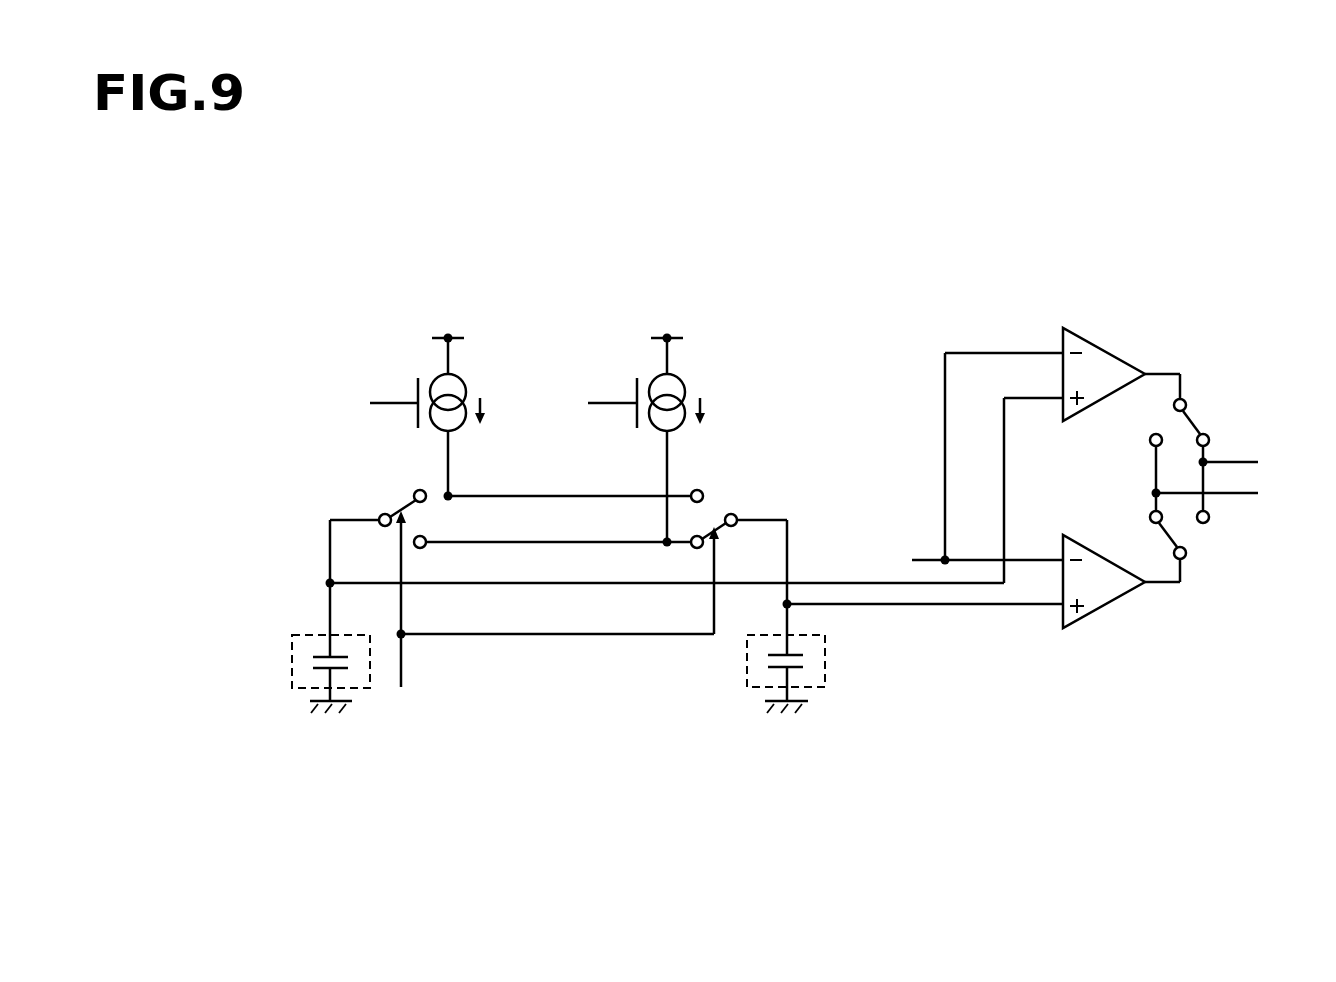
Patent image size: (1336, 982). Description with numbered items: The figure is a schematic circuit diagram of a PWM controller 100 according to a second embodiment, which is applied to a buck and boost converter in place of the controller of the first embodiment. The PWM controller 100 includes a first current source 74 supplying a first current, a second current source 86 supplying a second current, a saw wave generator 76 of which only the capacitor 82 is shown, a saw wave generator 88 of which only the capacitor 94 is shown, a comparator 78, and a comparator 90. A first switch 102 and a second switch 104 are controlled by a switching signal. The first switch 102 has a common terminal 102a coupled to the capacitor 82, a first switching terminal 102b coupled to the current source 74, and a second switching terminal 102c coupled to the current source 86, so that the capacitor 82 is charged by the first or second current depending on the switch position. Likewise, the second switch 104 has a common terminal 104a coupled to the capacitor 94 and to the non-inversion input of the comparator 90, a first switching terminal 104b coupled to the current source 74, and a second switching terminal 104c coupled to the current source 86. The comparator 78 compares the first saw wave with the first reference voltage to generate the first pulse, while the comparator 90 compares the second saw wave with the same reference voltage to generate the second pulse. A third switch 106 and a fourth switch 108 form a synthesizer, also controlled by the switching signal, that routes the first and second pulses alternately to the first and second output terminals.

The PWM controller 100 is at (892, 397).
The current source 74 is at (465, 378).
The current source 86 is at (684, 378).
The saw wave generator 76 is at (292, 650).
The capacitor 82 is at (342, 655).
The saw wave generator 88 is at (827, 660).
The capacitor 94 is at (776, 655).
The comparator 78 is at (1100, 344).
The comparator 90 is at (1100, 553).
The first switch 102 is at (400, 490).
The common terminal 102a is at (380, 517).
The first switching terminal 102b is at (419, 490).
The second switching terminal 102c is at (426, 540).
The second switch 104 is at (715, 511).
The common terminal 104a is at (737, 516).
The first switching terminal 104b is at (698, 490).
The second switching terminal 104c is at (692, 548).
The third switch 106 is at (1212, 416).
The fourth switch 108 is at (1205, 539).